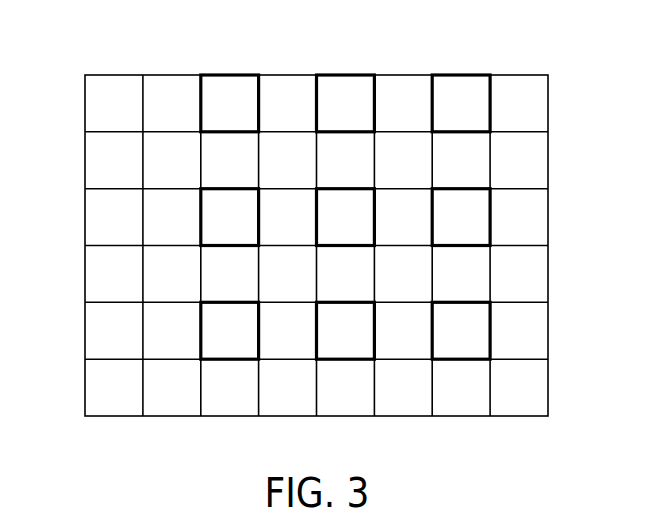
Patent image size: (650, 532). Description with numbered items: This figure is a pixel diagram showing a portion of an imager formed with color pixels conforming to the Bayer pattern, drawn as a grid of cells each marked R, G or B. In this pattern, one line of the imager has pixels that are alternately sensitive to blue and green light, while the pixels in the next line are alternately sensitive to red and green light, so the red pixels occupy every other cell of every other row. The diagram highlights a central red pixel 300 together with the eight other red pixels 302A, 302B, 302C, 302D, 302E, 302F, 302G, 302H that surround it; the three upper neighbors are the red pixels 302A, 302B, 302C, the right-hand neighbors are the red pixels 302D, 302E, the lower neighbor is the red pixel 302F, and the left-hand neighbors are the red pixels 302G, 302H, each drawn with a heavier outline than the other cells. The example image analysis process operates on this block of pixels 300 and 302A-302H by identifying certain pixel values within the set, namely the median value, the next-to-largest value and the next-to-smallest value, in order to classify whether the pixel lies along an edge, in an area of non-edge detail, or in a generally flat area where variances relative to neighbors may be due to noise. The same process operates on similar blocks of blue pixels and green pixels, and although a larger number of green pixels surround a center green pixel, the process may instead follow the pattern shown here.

The central red pixel 300 is at (328, 187).
The red pixel 302A is at (228, 75).
The red pixel 302B is at (348, 75).
The red pixel 302C is at (462, 75).
The red pixel 302D is at (492, 202).
The red pixel 302E is at (492, 322).
The red pixel 302F is at (338, 360).
The red pixel 302G is at (200, 320).
The red pixel 302H is at (200, 207).